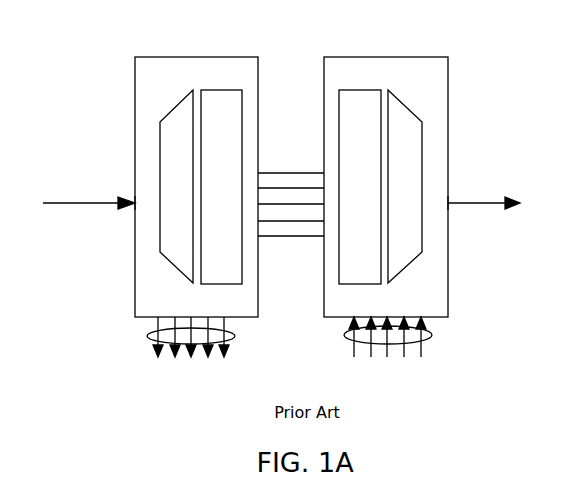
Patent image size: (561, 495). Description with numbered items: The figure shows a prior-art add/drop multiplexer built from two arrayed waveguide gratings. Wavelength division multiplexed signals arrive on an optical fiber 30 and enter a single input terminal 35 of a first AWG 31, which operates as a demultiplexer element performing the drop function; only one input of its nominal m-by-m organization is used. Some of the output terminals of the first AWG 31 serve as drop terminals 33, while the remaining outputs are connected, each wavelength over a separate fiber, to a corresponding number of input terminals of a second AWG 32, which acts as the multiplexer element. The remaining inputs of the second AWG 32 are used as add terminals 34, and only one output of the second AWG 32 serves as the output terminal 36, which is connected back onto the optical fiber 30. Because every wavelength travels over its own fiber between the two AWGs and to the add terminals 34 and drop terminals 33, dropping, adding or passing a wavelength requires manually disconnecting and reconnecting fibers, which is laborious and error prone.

The optical fiber 30 is at (77, 202).
The first AWG 31 is at (201, 57).
The second AWG 32 is at (359, 57).
The drop terminals 33 is at (143, 334).
The add terminals 34 is at (427, 326).
The input terminal 35 is at (134, 207).
The output terminal 36 is at (448, 203).